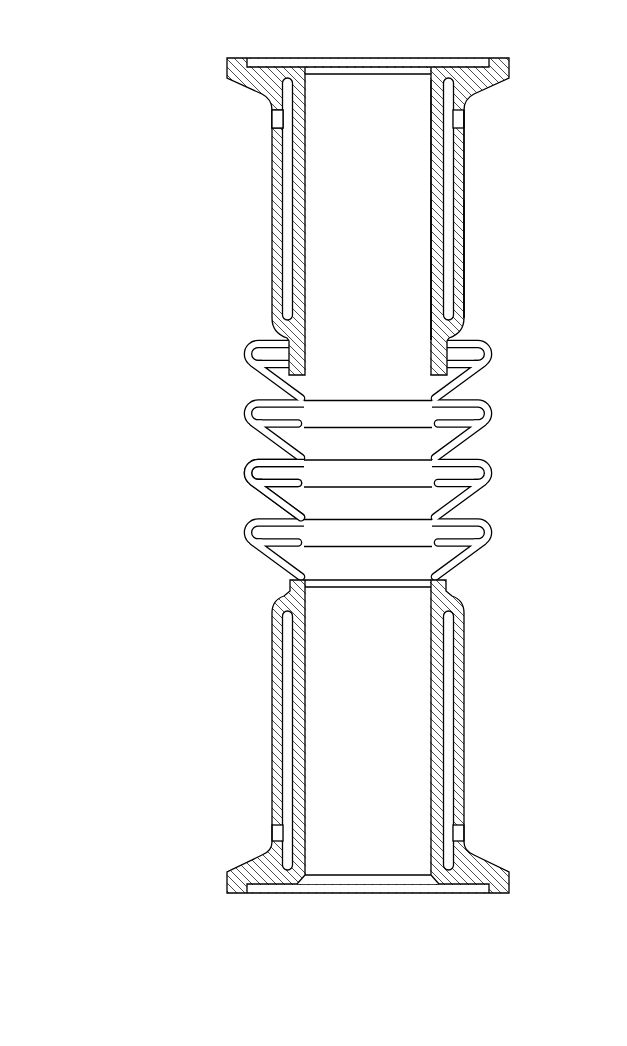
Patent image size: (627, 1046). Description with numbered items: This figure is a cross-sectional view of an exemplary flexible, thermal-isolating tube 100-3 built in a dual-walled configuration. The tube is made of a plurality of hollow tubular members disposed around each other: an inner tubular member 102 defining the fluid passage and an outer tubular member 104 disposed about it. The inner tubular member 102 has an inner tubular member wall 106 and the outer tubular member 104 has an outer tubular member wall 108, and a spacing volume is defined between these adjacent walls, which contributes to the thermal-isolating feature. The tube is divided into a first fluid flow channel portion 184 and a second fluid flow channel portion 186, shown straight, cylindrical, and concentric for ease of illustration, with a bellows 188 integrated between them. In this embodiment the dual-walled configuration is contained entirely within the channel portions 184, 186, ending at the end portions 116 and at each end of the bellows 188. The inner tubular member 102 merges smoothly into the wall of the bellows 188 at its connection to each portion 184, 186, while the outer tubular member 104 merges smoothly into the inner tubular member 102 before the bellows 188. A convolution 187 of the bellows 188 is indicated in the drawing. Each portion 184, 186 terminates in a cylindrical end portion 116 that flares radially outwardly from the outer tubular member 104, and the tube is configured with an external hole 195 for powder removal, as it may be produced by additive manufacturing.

The flexible, thermal-isolating tube 100-3 is at (130, 138).
The end portion 116 is at (510, 69).
The external hole 195 is at (272, 119).
The inner tubular member 102 is at (436, 188).
The outer tubular member 104 is at (461, 188).
The inner tubular member wall 106 is at (434, 256).
The outer tubular member wall 108 is at (463, 272).
The first fluid flow channel portion 184 is at (396, 221).
The bellows 188 is at (500, 333).
The second fluid flow channel portion 186 is at (472, 590).
The convolution 187 is at (246, 472).